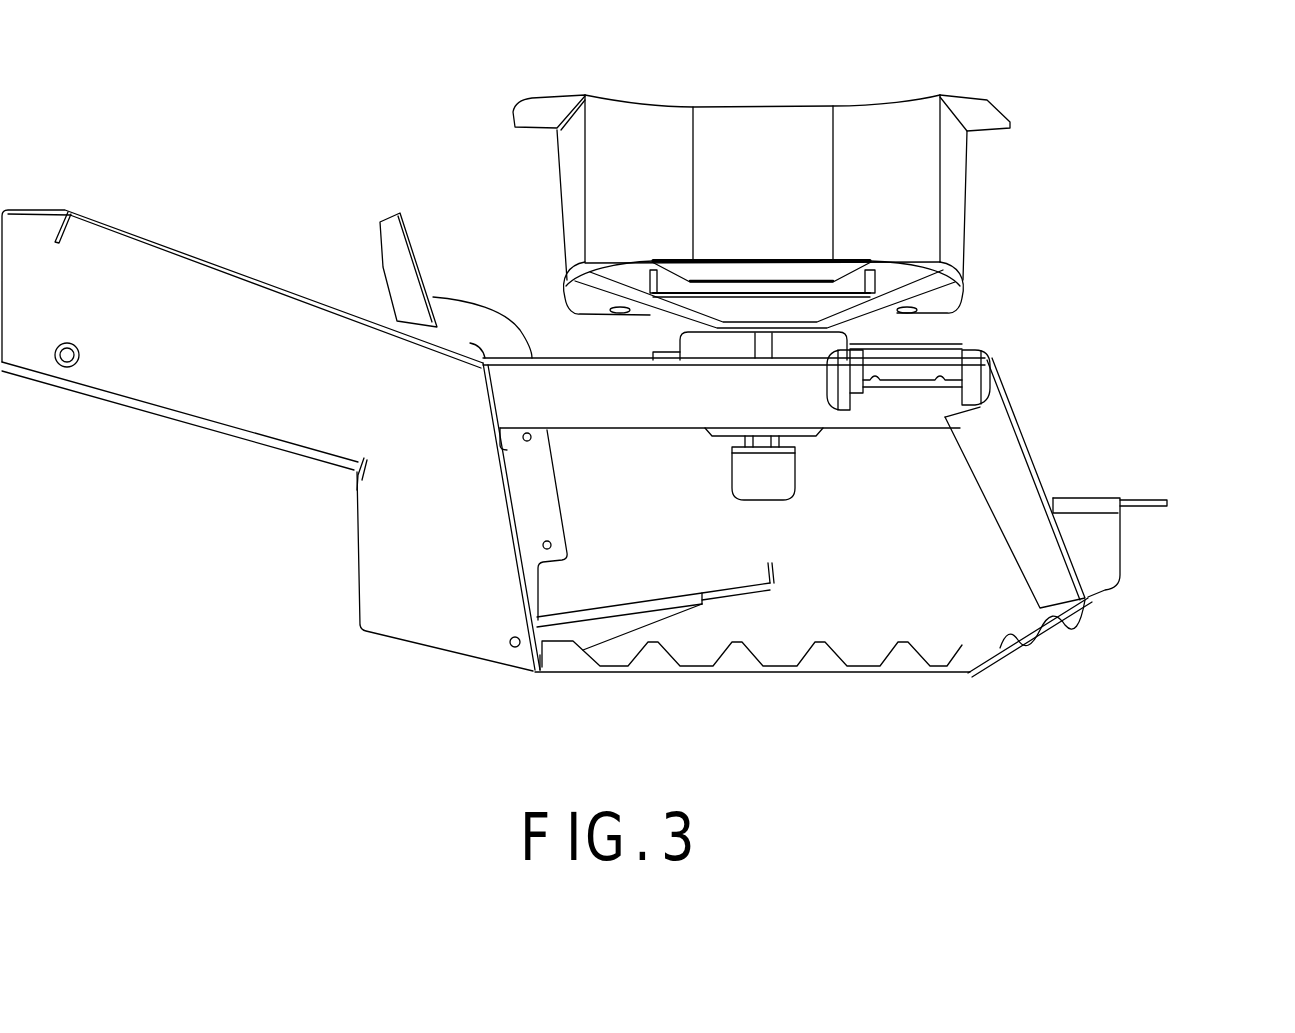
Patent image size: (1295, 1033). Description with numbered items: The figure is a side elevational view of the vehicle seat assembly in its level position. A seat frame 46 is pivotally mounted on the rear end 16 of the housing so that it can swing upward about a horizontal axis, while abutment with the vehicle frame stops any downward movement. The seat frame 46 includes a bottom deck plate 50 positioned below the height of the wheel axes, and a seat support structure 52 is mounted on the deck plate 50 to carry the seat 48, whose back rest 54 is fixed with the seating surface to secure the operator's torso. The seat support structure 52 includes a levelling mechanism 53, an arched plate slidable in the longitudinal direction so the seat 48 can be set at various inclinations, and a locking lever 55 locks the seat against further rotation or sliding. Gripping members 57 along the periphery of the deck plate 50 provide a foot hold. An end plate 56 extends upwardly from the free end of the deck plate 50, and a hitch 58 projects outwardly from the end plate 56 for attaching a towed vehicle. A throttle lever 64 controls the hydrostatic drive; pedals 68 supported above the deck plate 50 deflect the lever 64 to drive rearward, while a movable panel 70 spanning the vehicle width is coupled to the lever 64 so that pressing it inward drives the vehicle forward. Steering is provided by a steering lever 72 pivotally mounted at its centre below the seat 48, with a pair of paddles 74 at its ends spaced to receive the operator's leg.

The rear end of the housing 16 is at (1162, 413).
The seat frame 46 is at (878, 512).
The seat 48 is at (773, 262).
The bottom deck plate 50 is at (777, 677).
The seat support structure 52 is at (860, 331).
The levelling mechanism 53 is at (935, 283).
The back rest 54 is at (822, 137).
The locking lever 55 is at (748, 470).
The end plate 56 is at (1023, 427).
The gripping members 57 is at (968, 655).
The hitch 58 is at (1165, 503).
The throttle lever 64 is at (542, 497).
The pedals 68 is at (740, 590).
The movable panel 70 is at (413, 232).
The steering lever 72 is at (903, 385).
The paddles 74 is at (835, 380).